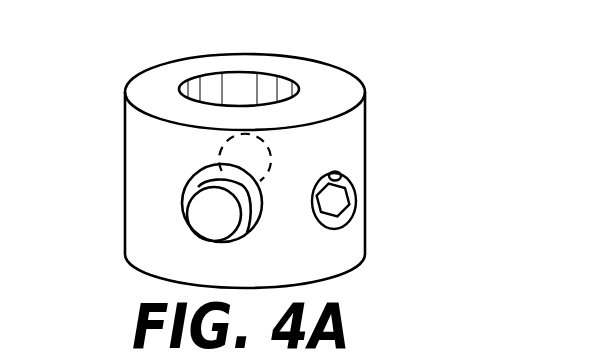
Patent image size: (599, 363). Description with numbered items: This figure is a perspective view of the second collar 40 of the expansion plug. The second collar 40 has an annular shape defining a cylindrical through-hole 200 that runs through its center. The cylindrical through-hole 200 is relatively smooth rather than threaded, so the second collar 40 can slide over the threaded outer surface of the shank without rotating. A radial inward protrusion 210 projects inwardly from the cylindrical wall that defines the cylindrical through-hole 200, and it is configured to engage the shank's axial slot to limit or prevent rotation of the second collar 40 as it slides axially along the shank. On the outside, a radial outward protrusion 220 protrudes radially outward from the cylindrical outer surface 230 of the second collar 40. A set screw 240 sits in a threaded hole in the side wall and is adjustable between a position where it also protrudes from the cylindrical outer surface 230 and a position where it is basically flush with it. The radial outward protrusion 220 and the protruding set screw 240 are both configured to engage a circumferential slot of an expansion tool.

The second collar 40 is at (398, 67).
The cylindrical through-hole 200 is at (233, 94).
The radial inward protrusion 210 is at (238, 150).
The radial outward protrusion 220 is at (202, 218).
The cylindrical outer surface 230 is at (142, 143).
The set screw 240 is at (338, 198).